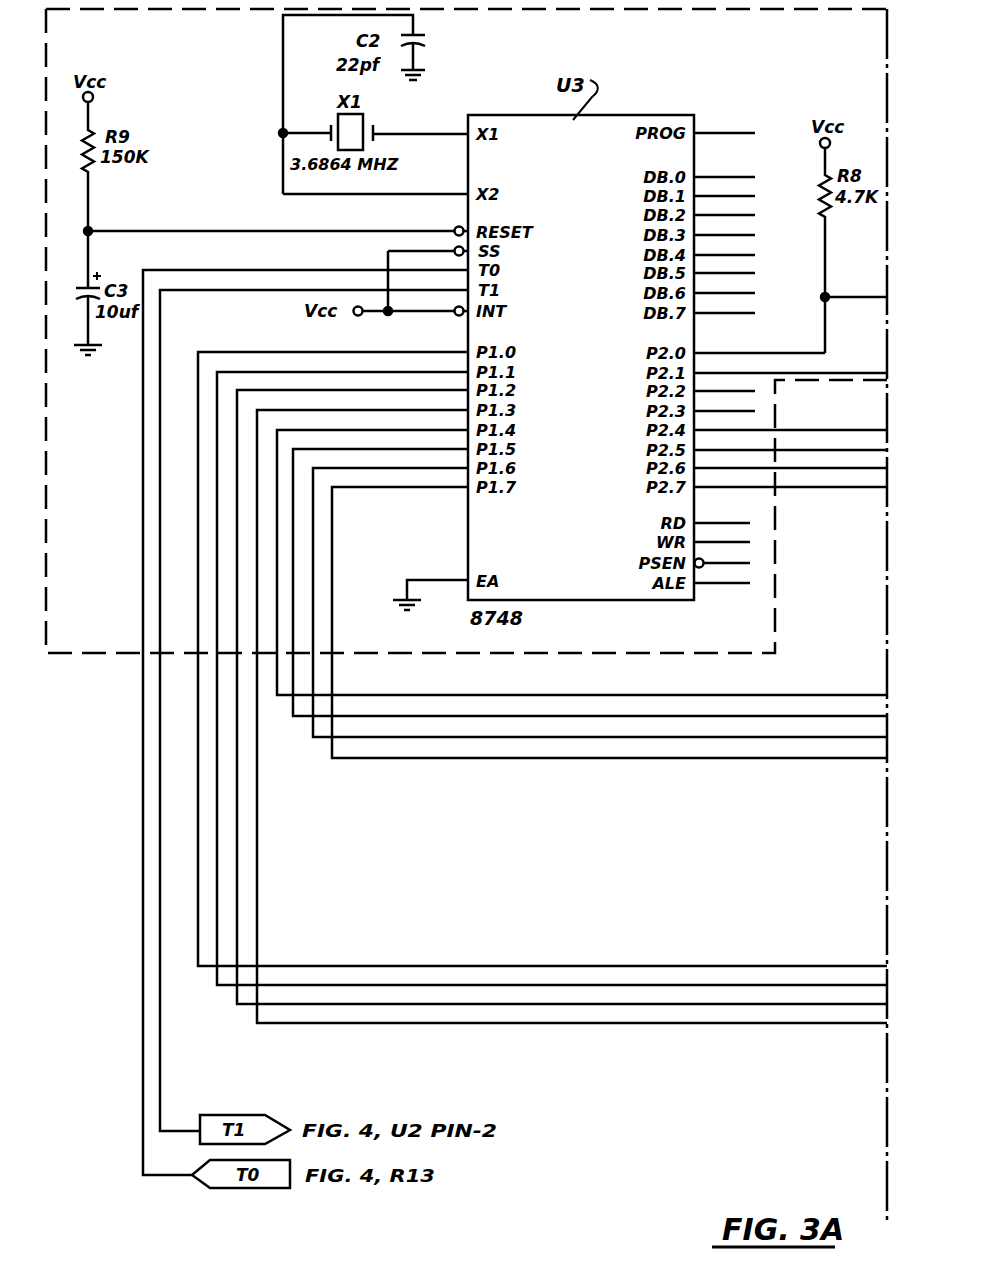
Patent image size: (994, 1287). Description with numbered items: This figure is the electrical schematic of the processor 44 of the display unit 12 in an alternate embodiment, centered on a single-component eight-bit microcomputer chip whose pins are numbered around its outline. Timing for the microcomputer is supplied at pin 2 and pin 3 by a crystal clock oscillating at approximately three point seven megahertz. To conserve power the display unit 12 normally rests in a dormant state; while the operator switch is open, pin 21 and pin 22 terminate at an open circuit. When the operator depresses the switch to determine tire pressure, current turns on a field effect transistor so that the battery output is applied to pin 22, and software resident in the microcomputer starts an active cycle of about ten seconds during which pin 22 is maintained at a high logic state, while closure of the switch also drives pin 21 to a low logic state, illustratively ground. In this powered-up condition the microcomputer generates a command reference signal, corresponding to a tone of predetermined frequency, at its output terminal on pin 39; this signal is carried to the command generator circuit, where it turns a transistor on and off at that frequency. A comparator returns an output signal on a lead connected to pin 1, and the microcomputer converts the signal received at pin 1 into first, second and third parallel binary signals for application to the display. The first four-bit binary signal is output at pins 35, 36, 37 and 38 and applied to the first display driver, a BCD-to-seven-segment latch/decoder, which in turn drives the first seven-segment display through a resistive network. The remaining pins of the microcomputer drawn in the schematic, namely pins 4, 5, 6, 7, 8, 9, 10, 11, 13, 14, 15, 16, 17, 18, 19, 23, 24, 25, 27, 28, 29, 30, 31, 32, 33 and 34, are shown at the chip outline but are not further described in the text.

The processor 44 is at (100, 651).
The pin 1 of processor U3 1 is at (305, 713).
The pin 2 of processor U3 2 is at (420, 124).
The pin 3 of processor U3 3 is at (375, 184).
The U3 pin 4 (RESET) 4 is at (278, 224).
The U3 pin 5 (SS) 5 is at (428, 271).
The U3 pin 6 (INT) 6 is at (411, 304).
The U3 pin 7 (EA) 7 is at (430, 585).
The U3 pin 8 (RD) 8 is at (722, 513).
The U3 pin 9 (PSEN) 9 is at (723, 556).
The U3 pin 10 (WR) 10 is at (722, 532).
The U3 pin 11 (ALE) 11 is at (722, 573).
The display unit 12 is at (724, 167).
The U3 pin 13 (DB.1) 13 is at (724, 186).
The U3 pin 14 (DB.2) 14 is at (724, 205).
The U3 pin 15 (DB.3) 15 is at (724, 225).
The U3 pin 16 (DB.4) 16 is at (724, 245).
The U3 pin 17 (DB.5) 17 is at (724, 263).
The U3 pin 18 (DB.6) 18 is at (724, 283).
The U3 pin 19 (DB.7) 19 is at (724, 303).
The pin 21 of processor U3 21 is at (759, 343).
The pin 22 of processor U3 22 is at (790, 363).
The U3 pin 23 (P2.2) 23 is at (724, 381).
The U3 pin 24 (P2.3) 24 is at (724, 401).
The U3 pin 25 (PROG) 25 is at (724, 123).
The U3 pin 27 (P1.0) 27 is at (542, 649).
The U3 pin 28 (P1.1) 28 is at (552, 669).
The U3 pin 29 (P1.2) 29 is at (562, 688).
The U3 pin 30 (P1.3) 30 is at (572, 707).
The U3 pin 31 (P1.4) 31 is at (582, 553).
The U3 pin 32 (P1.5) 32 is at (590, 573).
The U3 pin 33 (P1.6) 33 is at (600, 593).
The U3 pin 34 (P1.7) 34 is at (609, 613).
The pin 35 of processor U3 35 is at (790, 420).
The pin 36 of processor U3 36 is at (790, 440).
The pin 37 of processor U3 37 is at (790, 458).
The pin 38 of processor U3 38 is at (790, 477).
The pin 39 of processor U3 (output terminal T1) 39 is at (314, 701).